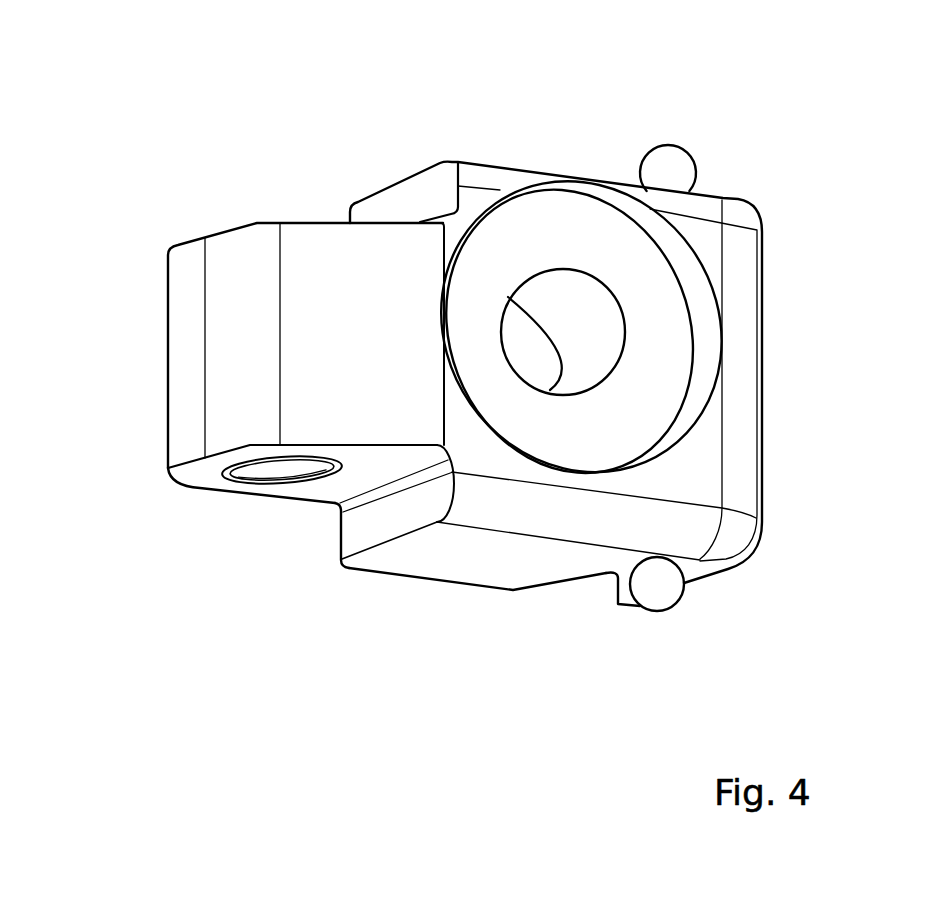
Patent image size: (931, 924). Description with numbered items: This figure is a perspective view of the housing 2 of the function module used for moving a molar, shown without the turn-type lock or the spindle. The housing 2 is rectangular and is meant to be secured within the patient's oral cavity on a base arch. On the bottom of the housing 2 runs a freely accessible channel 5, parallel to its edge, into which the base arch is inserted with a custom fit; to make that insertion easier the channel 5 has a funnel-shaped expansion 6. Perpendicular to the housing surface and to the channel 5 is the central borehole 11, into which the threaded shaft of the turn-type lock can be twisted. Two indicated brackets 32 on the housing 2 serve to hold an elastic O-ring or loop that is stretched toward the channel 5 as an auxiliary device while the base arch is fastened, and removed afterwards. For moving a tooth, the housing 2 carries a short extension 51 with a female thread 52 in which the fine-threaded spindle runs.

The housing 2 is at (478, 203).
The central borehole 11 is at (530, 357).
The brackets 32 is at (670, 180).
The short extension 51 is at (186, 372).
The female thread 52 is at (270, 470).
The funnel-shaped expansion 6 is at (555, 587).
The channel 5 is at (612, 583).